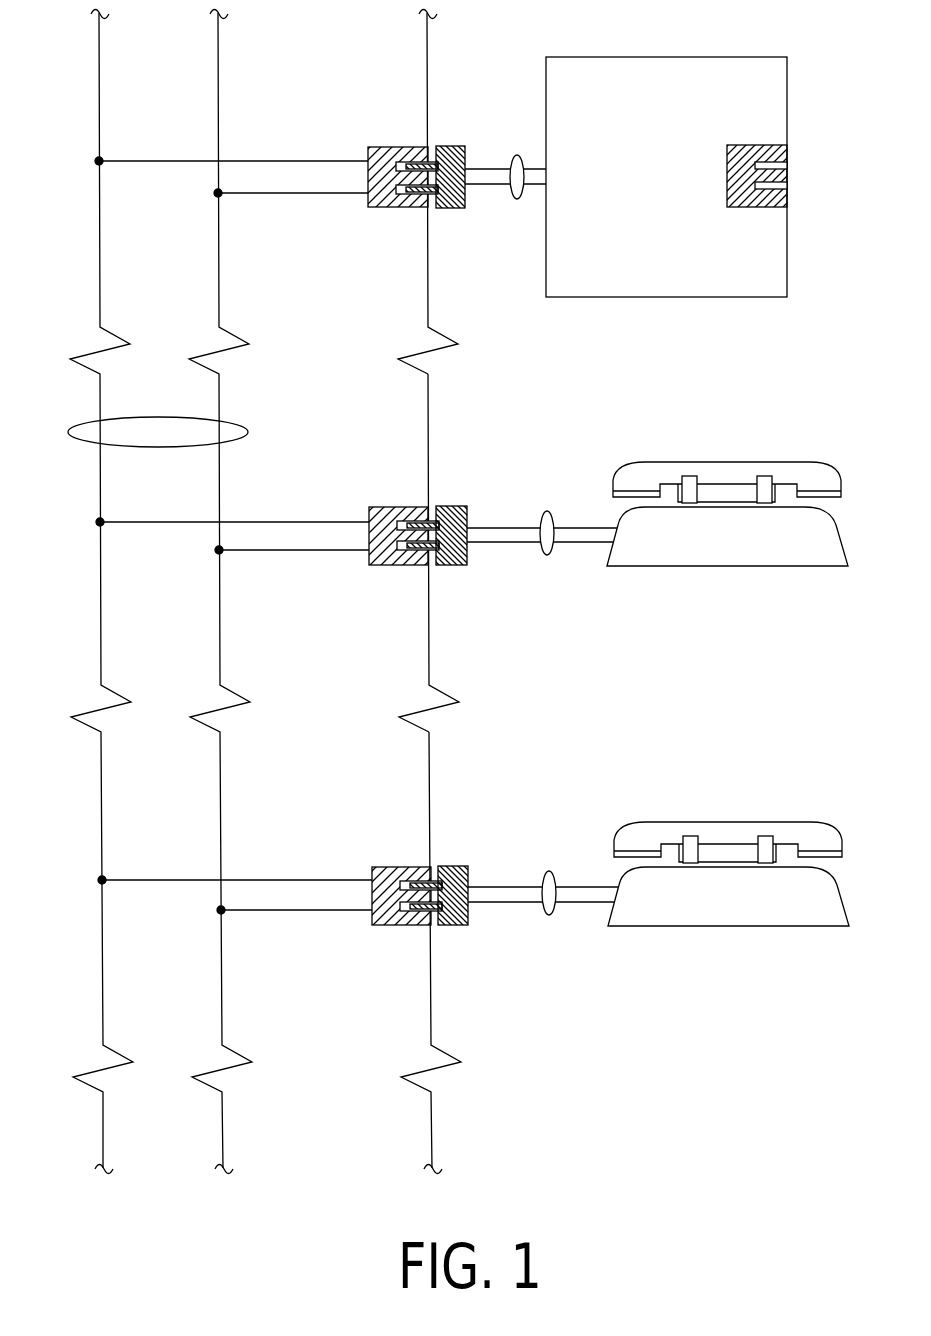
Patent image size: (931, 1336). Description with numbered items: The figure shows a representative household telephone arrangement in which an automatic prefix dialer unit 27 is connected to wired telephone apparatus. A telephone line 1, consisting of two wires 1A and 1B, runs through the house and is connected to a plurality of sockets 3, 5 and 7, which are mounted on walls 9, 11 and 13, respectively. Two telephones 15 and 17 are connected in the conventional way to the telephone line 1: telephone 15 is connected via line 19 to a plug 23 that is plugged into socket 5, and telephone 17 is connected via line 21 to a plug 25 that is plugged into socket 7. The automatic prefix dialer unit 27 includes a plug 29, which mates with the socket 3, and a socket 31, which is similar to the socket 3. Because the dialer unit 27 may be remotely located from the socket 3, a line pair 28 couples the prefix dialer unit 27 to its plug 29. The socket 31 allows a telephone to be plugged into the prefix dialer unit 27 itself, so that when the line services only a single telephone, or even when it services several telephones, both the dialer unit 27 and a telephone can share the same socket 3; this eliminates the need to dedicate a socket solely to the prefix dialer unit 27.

The telephone line 1 is at (248, 432).
The wire 1A is at (99, 105).
The wire 1B is at (218, 110).
The socket 3 is at (392, 147).
The socket 5 is at (388, 507).
The socket 7 is at (388, 867).
The wall 9 is at (427, 53).
The wall 11 is at (428, 403).
The wall 13 is at (430, 760).
The telephone 15 is at (722, 535).
The telephone 17 is at (714, 905).
The line 19 is at (547, 555).
The line 21 is at (549, 915).
The plug 23 is at (452, 565).
The plug 25 is at (458, 925).
The automatic prefix dialer unit 27 is at (656, 300).
The line pair 28 is at (517, 200).
The plug 29 is at (452, 146).
The socket 31 is at (748, 207).